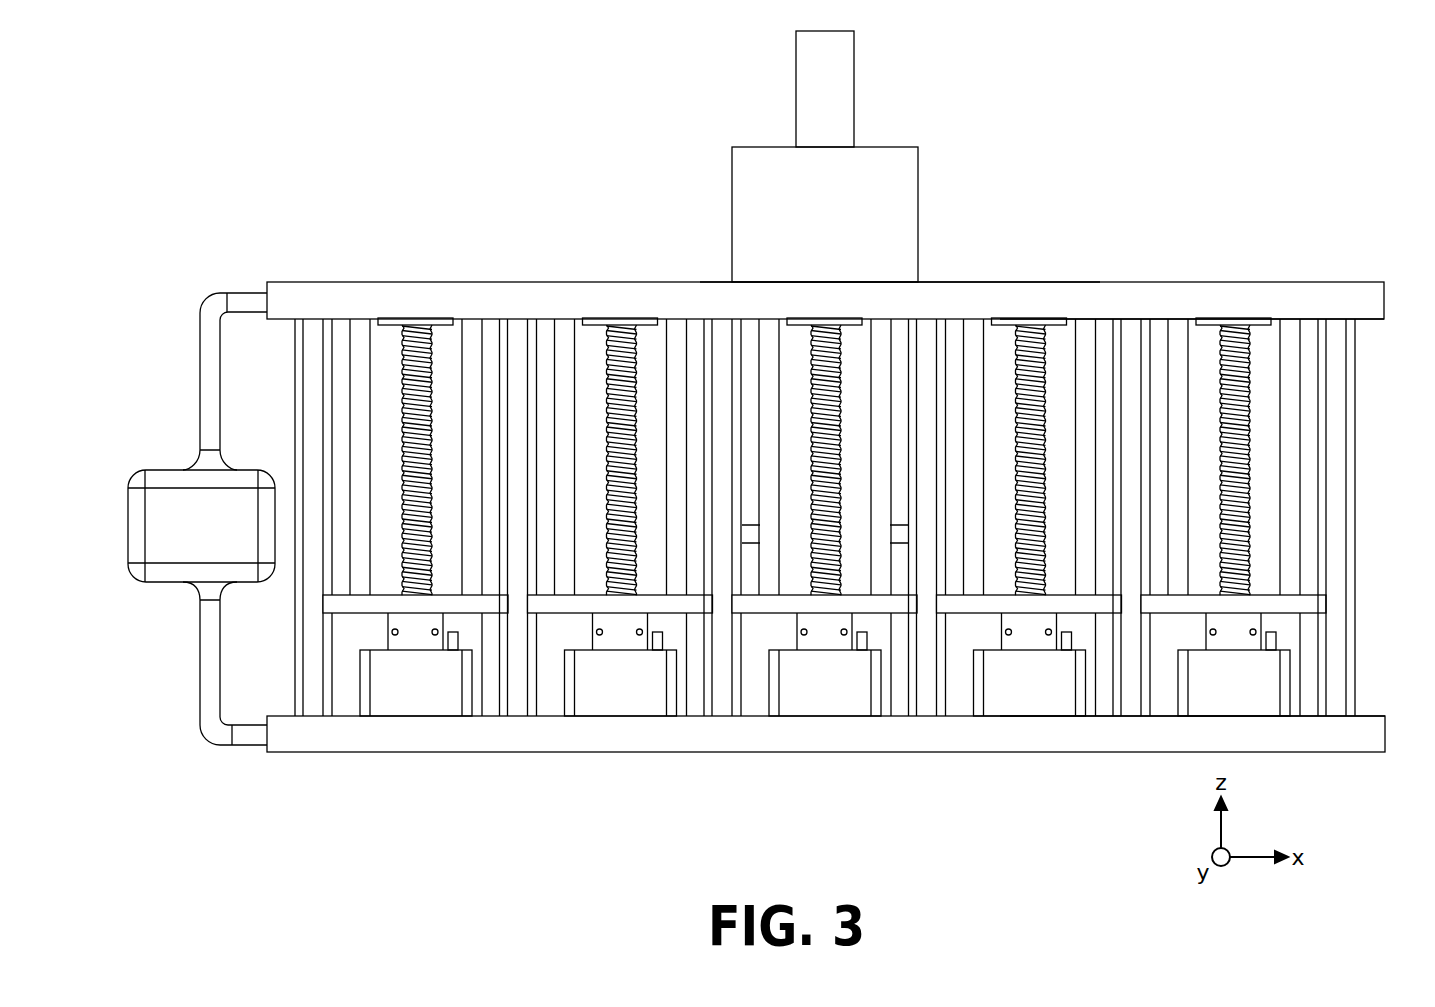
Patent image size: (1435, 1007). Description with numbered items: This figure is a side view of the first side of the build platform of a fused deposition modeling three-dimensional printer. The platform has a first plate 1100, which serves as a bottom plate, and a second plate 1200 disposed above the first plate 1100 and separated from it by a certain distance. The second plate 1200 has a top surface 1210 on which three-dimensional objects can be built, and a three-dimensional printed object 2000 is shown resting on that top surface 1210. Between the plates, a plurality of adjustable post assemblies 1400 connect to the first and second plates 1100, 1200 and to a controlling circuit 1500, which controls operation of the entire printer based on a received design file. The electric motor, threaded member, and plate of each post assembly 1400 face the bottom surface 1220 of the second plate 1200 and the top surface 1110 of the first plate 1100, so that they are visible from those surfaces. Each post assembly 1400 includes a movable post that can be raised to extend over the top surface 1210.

The first plate 1100 is at (1027, 752).
The top surface of the first plate 1110 is at (1374, 715).
The second plate 1200 is at (1133, 282).
The top surface of the second plate 1210 is at (938, 282).
The bottom surface of the second plate 1220 is at (1370, 320).
The adjustable post assembly 1400 is at (415, 688).
The controlling circuit 1500 is at (183, 572).
The 3D printed object 2000 is at (918, 178).